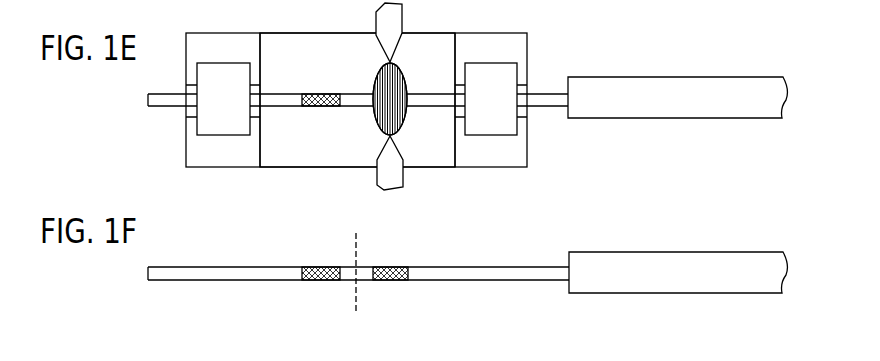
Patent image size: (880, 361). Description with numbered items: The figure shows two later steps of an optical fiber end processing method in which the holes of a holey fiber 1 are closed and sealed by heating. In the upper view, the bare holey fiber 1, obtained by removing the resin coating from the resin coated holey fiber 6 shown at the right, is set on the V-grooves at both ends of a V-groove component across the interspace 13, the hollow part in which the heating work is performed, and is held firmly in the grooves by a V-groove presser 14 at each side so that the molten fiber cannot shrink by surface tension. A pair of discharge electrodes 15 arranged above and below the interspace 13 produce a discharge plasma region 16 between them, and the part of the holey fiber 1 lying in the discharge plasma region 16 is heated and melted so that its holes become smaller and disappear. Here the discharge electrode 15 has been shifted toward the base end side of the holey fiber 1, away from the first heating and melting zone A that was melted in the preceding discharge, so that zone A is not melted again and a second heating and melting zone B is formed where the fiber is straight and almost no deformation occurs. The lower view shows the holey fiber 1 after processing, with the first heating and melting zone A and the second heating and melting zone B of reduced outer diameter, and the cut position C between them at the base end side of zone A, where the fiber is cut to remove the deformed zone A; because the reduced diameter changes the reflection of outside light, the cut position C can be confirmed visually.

In FIG. 1E, the holey fiber 1 is at (275, 110).
In FIG. 1F, the holey fiber 1 is at (484, 283).
In FIG. 1E, the resin coated holey fiber 6 is at (652, 77).
In FIG. 1F, the resin coated holey fiber 6 is at (647, 252).
In FIG. 1E, the interspace 13 is at (318, 75).
In FIG. 1E, the V-groove presser 14 is at (218, 78).
In FIG. 1E, the discharge electrode 15 is at (408, 20).
In FIG. 1E, the discharge plasma region 16 is at (405, 118).
In FIG. 1E, the first heating and melting zone A is at (320, 108).
In FIG. 1F, the first heating and melting zone A is at (322, 282).
In FIG. 1F, the second heating and melting zone B is at (392, 282).
In FIG. 1F, the cut position C is at (355, 287).